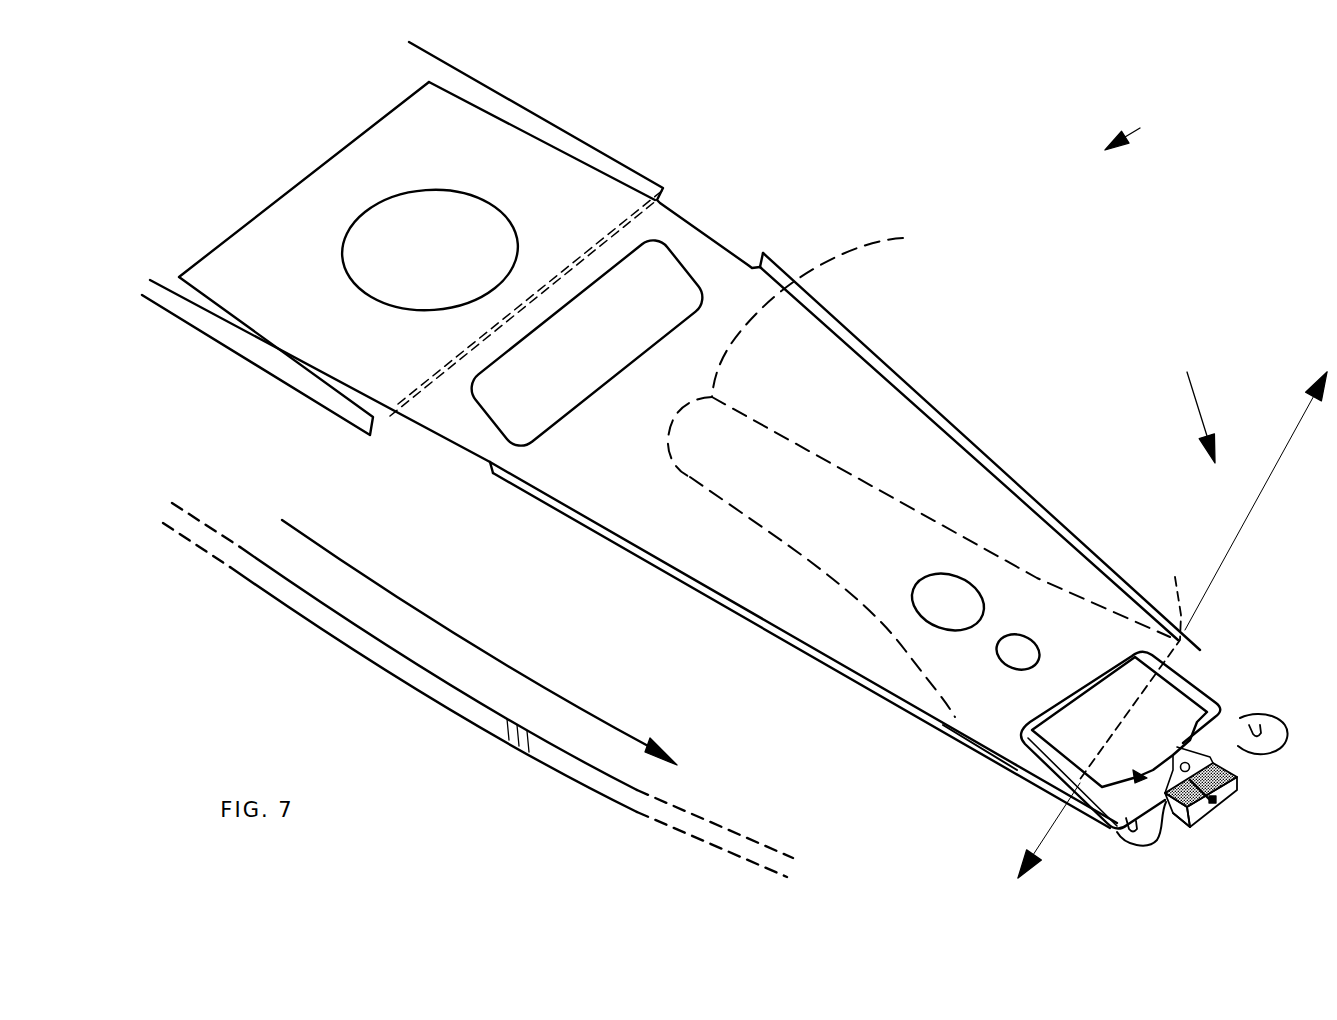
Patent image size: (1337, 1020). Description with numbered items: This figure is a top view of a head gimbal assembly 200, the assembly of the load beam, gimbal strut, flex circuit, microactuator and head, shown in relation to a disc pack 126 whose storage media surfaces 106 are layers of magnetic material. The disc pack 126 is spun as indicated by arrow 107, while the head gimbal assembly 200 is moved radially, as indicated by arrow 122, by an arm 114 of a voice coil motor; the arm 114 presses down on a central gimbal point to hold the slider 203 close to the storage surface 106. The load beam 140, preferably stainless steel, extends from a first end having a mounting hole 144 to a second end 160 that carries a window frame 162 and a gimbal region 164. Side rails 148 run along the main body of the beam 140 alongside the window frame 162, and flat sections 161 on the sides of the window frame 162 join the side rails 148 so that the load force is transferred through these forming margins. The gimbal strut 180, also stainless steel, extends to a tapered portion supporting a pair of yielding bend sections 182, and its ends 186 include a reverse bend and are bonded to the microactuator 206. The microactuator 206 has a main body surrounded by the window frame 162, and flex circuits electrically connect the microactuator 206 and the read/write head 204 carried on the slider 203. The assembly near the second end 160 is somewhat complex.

The storage media surfaces 106 is at (385, 632).
The arrow 107 is at (457, 633).
The arm 114 is at (585, 142).
The arrow 122 is at (1307, 413).
The disc pack 126 is at (388, 662).
The load beam 140 is at (320, 327).
The mounting hole 144 is at (348, 247).
The side rails 148 is at (537, 500).
The second end 160 is at (1190, 401).
The flat sections 161 is at (1197, 672).
The window frame 162 is at (1068, 682).
The gimbal region 164 is at (1185, 800).
The gimbal strut 180 is at (904, 238).
The yielding bend sections 182 is at (940, 808).
The ends 186 is at (1243, 714).
The head gimbal assembly 200 is at (1144, 130).
The slider 203 is at (1183, 823).
The read/write head 204 is at (1214, 800).
The microactuator 206 is at (1060, 738).